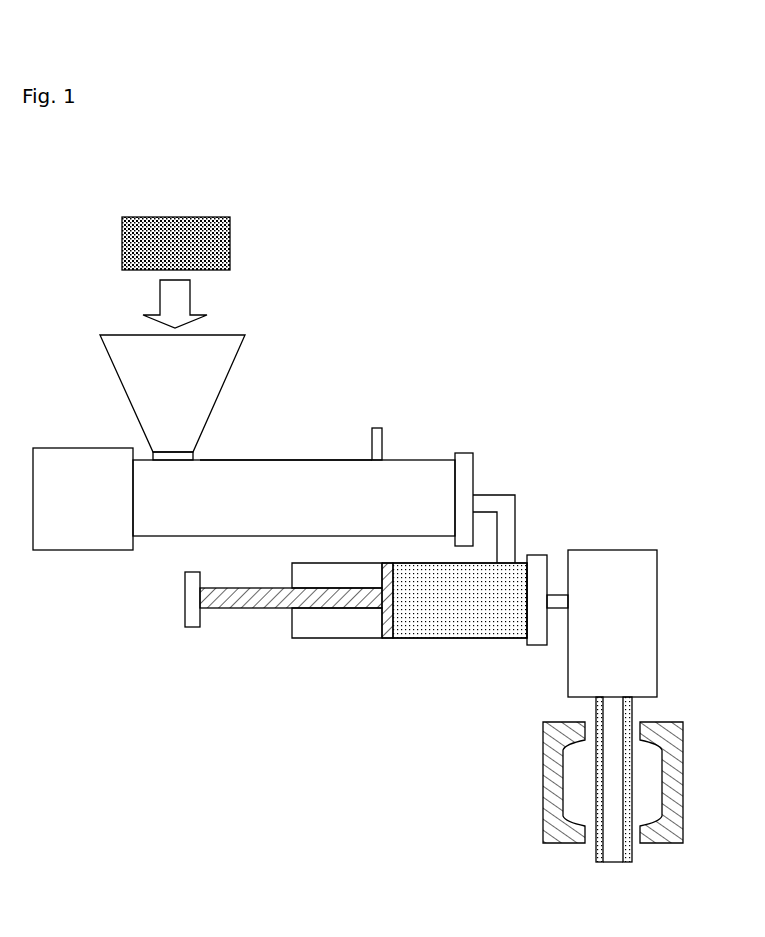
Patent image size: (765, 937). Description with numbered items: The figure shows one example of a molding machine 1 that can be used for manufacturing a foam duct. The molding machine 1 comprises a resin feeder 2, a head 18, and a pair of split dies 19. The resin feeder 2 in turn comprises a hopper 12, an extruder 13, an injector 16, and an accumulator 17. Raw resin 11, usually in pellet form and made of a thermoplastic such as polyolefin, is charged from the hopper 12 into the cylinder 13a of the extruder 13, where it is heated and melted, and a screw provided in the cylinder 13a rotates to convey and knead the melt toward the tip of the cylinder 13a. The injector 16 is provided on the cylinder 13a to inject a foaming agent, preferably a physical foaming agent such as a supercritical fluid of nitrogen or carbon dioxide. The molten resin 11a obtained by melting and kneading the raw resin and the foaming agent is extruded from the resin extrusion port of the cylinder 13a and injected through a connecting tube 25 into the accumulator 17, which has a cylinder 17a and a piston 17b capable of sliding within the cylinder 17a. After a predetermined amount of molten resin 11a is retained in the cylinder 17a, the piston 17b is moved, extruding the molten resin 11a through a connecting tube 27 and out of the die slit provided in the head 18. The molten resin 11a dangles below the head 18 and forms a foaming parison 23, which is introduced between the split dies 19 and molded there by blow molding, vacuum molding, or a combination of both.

The molding machine 1 is at (594, 209).
The resin feeder 2 is at (370, 340).
The raw resin 11 is at (220, 243).
The molten resin 11a is at (470, 612).
The hopper 12 is at (118, 355).
The extruder 13 is at (257, 433).
The cylinder 13a is at (287, 467).
The injector 16 is at (381, 438).
The accumulator 17 is at (388, 673).
The cylinder 17a is at (330, 640).
The piston 17b is at (238, 598).
The head 18 is at (614, 552).
The split dies 19 is at (578, 847).
The foaming parison 23 is at (632, 703).
The connecting tube 25 is at (493, 497).
The connecting tube 27 is at (557, 600).